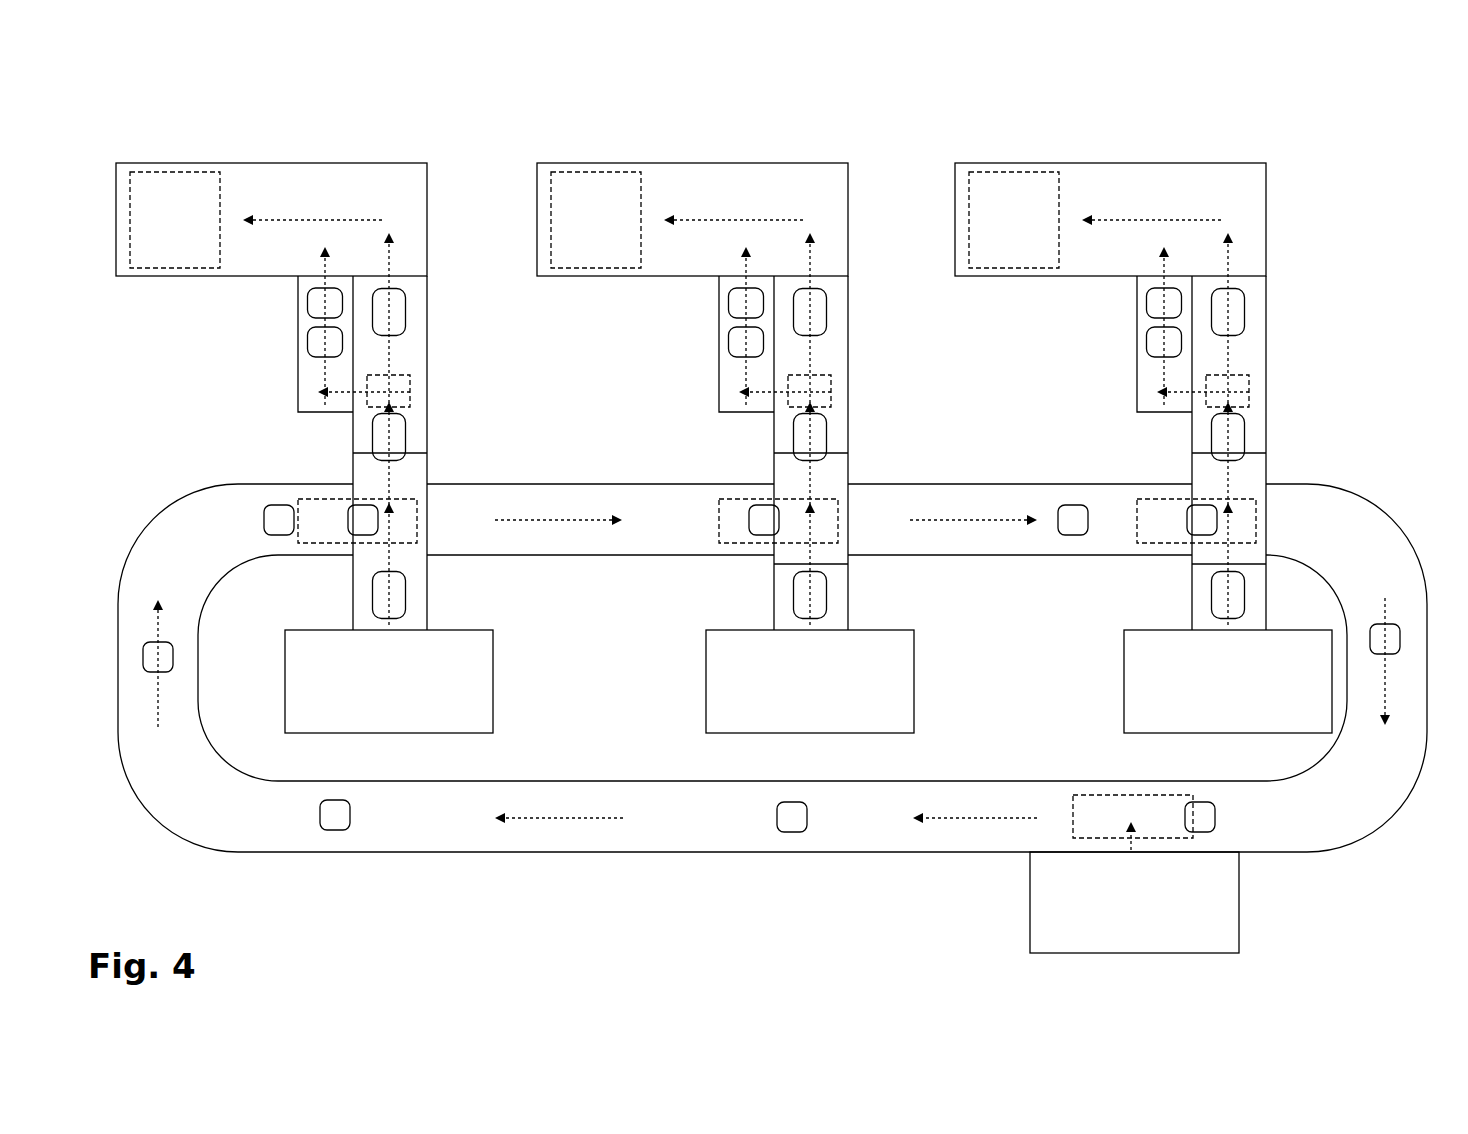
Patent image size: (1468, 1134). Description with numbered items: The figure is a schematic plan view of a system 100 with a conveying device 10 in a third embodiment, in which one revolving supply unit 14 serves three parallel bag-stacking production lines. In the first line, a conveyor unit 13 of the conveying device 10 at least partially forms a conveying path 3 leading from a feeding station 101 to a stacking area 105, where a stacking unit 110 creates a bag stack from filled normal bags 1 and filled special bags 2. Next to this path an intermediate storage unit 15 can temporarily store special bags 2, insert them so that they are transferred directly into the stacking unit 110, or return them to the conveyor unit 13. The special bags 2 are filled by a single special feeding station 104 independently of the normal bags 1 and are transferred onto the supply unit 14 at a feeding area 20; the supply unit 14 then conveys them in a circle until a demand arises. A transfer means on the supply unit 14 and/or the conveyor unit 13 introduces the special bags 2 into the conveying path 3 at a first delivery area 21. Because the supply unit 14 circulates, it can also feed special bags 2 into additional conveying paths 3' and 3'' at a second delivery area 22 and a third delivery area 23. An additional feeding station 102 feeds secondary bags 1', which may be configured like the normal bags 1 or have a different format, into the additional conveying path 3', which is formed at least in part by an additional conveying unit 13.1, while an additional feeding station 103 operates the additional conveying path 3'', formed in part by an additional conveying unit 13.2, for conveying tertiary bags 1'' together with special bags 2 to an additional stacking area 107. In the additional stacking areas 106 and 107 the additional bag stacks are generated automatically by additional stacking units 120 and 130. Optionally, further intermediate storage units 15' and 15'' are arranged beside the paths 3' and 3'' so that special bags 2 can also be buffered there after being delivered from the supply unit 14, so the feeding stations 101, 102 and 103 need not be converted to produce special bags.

The system 100 is at (143, 128).
The conveying device 10 is at (772, 523).
The supply unit 14 is at (1365, 537).
The conveyor unit 13 is at (396, 431).
The additional conveying unit 13.1 is at (830, 431).
The additional conveying unit 13.2 is at (1234, 434).
The normal bag 1 is at (426, 454).
The secondary bag 1' is at (849, 458).
The tertiary bag 1'' is at (1269, 451).
The special bag 2 is at (267, 522).
The conveying path 3 is at (429, 439).
The additional conveying path 3' is at (860, 590).
The additional conveying path 3'' is at (1179, 596).
The intermediate storage unit 15 is at (330, 408).
The intermediate storage unit 15' is at (750, 408).
The intermediate storage unit 15'' is at (1160, 411).
The feeding area 20 is at (1073, 823).
The first delivery area 21 is at (418, 513).
The second delivery area 22 is at (838, 527).
The third delivery area 23 is at (1260, 523).
The feeding station 101 is at (478, 705).
The additional feeding station 102 is at (900, 708).
The additional feeding station 103 is at (1137, 690).
The special feeding station 104 is at (1228, 930).
The stacking area 105 is at (190, 172).
The additional stacking area 106 is at (593, 172).
The additional stacking area 107 is at (1040, 172).
The stacking unit 110 is at (322, 190).
The additional stacking unit 120 is at (722, 192).
The additional stacking unit 130 is at (1165, 192).